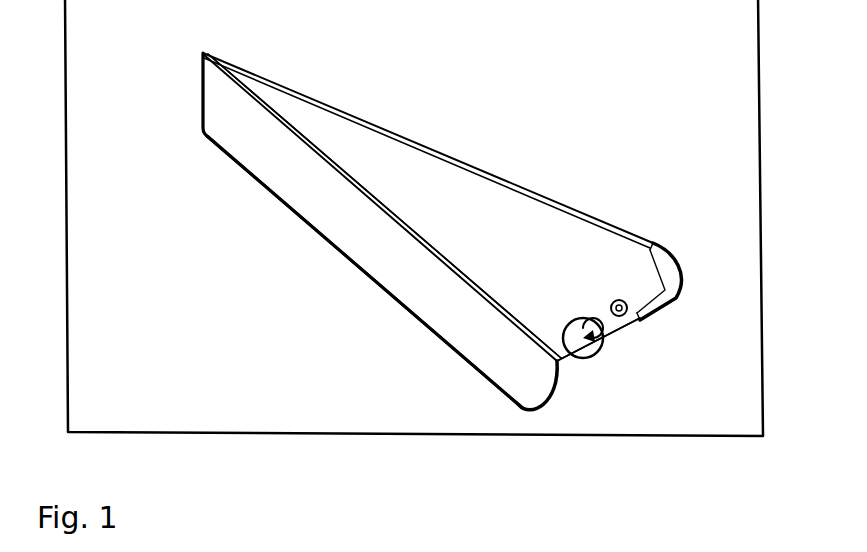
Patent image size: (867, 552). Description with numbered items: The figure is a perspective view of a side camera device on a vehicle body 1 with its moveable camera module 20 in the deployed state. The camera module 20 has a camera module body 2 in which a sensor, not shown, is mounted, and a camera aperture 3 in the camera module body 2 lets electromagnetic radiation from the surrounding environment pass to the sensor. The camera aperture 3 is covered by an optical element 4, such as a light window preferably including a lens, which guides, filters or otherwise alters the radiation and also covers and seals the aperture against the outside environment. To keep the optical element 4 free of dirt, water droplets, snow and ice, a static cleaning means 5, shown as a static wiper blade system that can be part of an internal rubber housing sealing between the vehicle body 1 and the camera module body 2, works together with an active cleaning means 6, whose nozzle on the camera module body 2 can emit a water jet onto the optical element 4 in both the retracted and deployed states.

The vehicle body 1 is at (492, 150).
The camera module body 2 is at (227, 100).
The camera module 20 is at (312, 255).
The static cleaning means 5 is at (653, 242).
The active cleaning means 6 is at (648, 323).
The optical element 4 is at (592, 345).
The camera aperture 3 is at (608, 355).